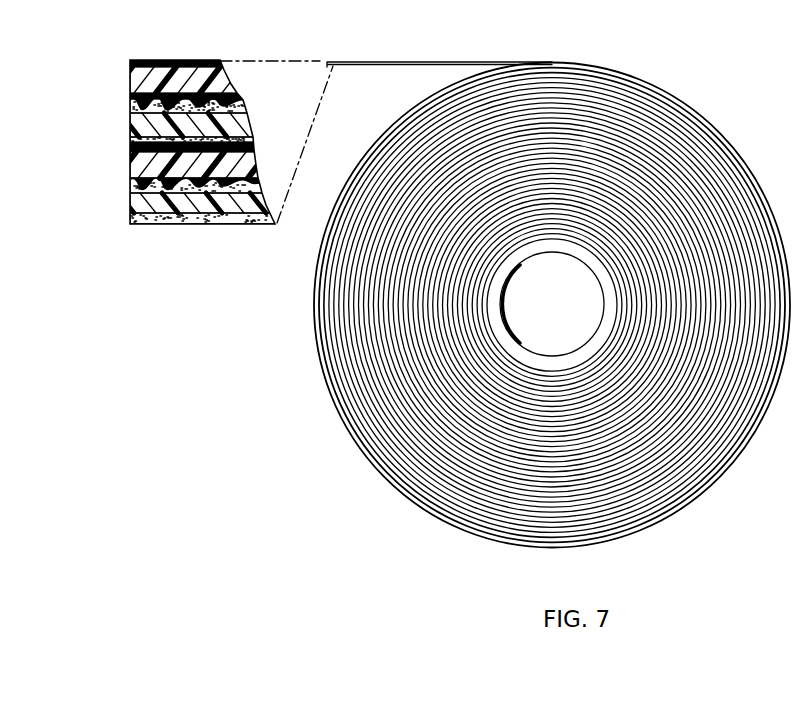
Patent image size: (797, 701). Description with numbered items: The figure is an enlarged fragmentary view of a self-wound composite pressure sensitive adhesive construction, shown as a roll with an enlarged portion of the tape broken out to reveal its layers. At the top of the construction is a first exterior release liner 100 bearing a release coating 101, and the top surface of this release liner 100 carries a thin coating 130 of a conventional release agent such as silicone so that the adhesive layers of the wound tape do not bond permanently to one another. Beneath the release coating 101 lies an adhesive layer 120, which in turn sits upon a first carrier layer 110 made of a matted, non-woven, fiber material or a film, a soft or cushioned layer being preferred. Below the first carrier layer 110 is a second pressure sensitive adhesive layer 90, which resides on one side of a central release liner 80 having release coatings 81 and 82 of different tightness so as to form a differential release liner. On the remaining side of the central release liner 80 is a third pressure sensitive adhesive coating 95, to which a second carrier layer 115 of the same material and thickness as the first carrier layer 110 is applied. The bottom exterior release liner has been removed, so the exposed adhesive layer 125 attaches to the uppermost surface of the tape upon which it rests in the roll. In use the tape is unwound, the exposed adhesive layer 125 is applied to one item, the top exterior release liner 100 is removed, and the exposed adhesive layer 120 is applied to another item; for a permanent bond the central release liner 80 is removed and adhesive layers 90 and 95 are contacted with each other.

The thin coating of release agent 130 is at (130, 63).
The first exterior release liner 100 is at (130, 86).
The release coating 101 is at (130, 98).
The adhesive layer 120 is at (130, 110).
The first carrier layer 110 is at (130, 128).
The second pressure sensitive adhesive layer 90 is at (130, 140).
The release coating 81 is at (130, 150).
The central release liner 80 is at (130, 166).
The release coating 82 is at (130, 183).
The third pressure sensitive adhesive coating 95 is at (130, 198).
The second carrier layer 115 is at (130, 213).
The adhesive layer 125 is at (130, 224).